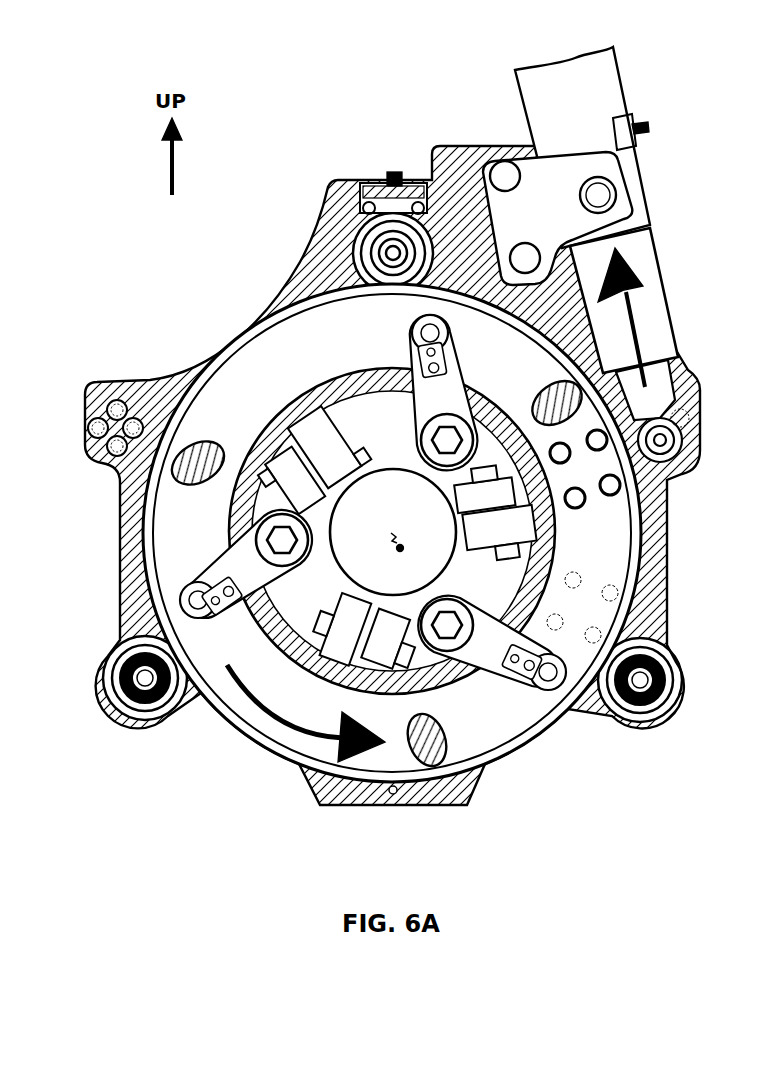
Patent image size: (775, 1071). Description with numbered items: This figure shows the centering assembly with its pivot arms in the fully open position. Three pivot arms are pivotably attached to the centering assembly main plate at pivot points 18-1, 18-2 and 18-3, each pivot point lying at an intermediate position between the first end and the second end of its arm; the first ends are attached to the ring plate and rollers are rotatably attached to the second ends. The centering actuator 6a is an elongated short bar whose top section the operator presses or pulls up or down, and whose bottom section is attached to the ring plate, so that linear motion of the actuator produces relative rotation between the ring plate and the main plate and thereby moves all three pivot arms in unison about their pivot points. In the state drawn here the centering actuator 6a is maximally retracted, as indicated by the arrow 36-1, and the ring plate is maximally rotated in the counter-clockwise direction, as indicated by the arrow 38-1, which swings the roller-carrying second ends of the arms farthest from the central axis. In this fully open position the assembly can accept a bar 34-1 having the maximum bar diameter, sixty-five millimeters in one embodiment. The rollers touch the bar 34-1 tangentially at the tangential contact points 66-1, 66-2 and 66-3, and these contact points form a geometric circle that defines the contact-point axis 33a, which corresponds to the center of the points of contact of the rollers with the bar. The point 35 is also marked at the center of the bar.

The centering actuator 6a is at (592, 88).
The arrow 36-1 is at (645, 318).
The tangential contact point 66-1 is at (372, 400).
The tangential contact point 66-2 is at (558, 522).
The tangential contact point 66-3 is at (272, 648).
The pivot point 18-1 is at (282, 542).
The pivot point 18-2 is at (447, 440).
The pivot point 18-3 is at (447, 628).
The contact-point axis 33a is at (395, 537).
The bar 34-1 is at (448, 521).
The rotation axis point 35 is at (400, 548).
The arrow 38-1 is at (272, 718).